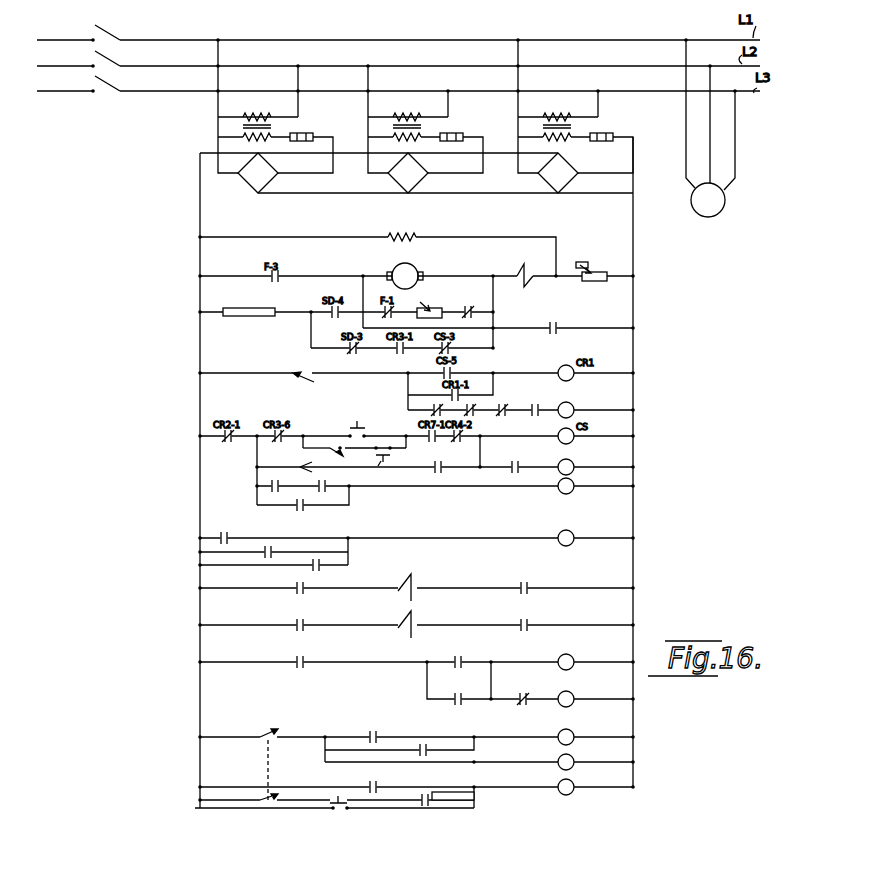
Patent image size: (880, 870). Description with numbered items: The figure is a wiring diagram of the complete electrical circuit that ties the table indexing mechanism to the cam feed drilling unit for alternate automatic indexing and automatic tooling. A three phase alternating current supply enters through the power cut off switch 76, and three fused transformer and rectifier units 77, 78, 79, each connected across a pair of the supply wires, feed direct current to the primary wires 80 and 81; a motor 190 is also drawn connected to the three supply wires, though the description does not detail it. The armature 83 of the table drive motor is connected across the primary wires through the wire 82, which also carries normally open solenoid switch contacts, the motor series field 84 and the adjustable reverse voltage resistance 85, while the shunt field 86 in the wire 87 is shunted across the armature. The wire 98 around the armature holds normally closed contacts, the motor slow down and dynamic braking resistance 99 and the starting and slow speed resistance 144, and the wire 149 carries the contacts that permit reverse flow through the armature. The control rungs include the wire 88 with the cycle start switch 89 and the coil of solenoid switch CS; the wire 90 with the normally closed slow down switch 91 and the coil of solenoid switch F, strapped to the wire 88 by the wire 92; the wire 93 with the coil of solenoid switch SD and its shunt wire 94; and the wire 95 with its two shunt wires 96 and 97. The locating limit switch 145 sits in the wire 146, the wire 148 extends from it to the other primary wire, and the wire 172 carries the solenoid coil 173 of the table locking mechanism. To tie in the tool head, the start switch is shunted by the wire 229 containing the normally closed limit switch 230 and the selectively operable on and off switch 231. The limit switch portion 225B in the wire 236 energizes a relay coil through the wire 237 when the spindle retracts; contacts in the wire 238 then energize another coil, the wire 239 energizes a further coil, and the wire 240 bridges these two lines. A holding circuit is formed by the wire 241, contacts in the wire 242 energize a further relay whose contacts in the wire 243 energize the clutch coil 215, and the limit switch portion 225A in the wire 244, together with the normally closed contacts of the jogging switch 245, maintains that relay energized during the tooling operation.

The power cut off switch 76 is at (97, 96).
The fused transformer and rectifier unit 77 is at (293, 126).
The fused transformer and rectifier unit 78 is at (443, 126).
The fused transformer and rectifier unit 79 is at (600, 126).
The primary direct current wire 80 is at (200, 209).
The primary direct current wire 81 is at (633, 238).
The wire 82 is at (345, 272).
The armature 83 is at (418, 268).
The motor series field 84 is at (530, 260).
The adjustable reverse voltage resistance 85 is at (594, 267).
The shunt field 86 is at (420, 235).
The wire 87 is at (541, 225).
The wire 88 is at (385, 445).
The cycle start or manual control switch 89 is at (356, 421).
The wire 90 is at (605, 466).
The slow down switch 91 is at (300, 467).
The wire 92 is at (482, 456).
The wire 93 is at (448, 488).
The wire 94 is at (335, 506).
The wire 95 is at (437, 537).
The wire 96 is at (208, 553).
The wire 97 is at (210, 569).
The wire 98 is at (448, 306).
The motor slow down and dynamic braking resistance 99 is at (417, 306).
The starting and slow speed resistance 144 is at (269, 306).
The locating limit switch 145 is at (305, 362).
The wire 146 is at (384, 372).
The wire 148 is at (611, 409).
The wire 149 is at (608, 326).
The wire 172 is at (492, 587).
The solenoid coil 173 is at (418, 579).
The motor 190 is at (725, 202).
The coil 215 is at (445, 614).
The limit switch portion 225A is at (268, 804).
The limit switch portion 225B is at (268, 734).
The wire 229 is at (301, 446).
The limit switch 230 is at (337, 445).
The on and off switch 231 is at (383, 465).
The wire 236 is at (325, 736).
The wire 237 is at (325, 763).
The wire 238 is at (395, 663).
The wire 239 is at (442, 700).
The wire 240 is at (491, 675).
The wire 241 is at (476, 751).
The wire 242 is at (492, 790).
The wire 243 is at (478, 624).
The wire 244 is at (390, 810).
The jogging switch 245 is at (338, 814).